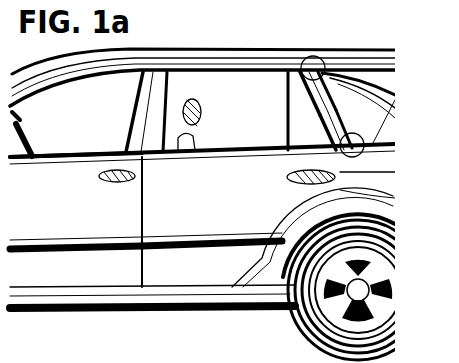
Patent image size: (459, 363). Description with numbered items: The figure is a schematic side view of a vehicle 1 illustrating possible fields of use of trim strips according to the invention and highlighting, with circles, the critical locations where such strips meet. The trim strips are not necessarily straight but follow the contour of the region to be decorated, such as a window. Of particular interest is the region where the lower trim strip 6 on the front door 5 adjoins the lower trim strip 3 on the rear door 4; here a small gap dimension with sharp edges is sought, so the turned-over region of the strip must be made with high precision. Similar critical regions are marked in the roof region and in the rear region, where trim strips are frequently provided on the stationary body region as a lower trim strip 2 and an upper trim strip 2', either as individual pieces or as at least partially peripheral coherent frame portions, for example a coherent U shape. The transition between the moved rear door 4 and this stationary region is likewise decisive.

The vehicle 1 is at (407, 147).
The lower trim strip 2 is at (374, 158).
The upper trim strip 2' is at (377, 73).
The lower trim strip 3 is at (260, 148).
The rear door 4 is at (213, 224).
The front door 5 is at (71, 228).
The lower trim strip 6 is at (50, 155).